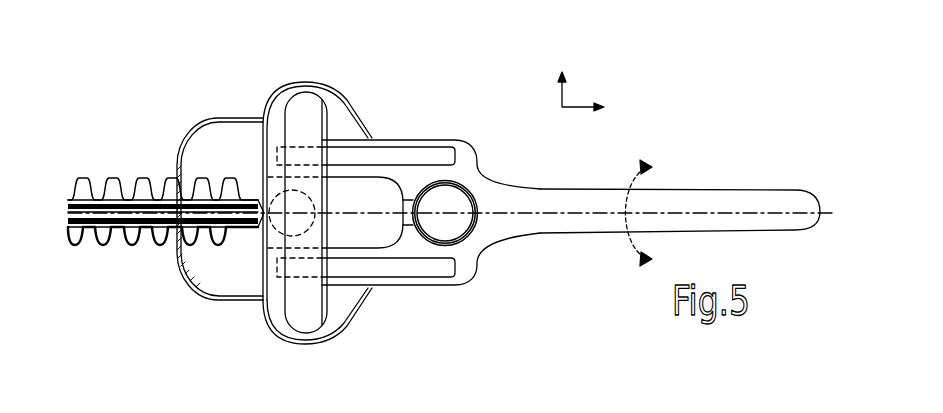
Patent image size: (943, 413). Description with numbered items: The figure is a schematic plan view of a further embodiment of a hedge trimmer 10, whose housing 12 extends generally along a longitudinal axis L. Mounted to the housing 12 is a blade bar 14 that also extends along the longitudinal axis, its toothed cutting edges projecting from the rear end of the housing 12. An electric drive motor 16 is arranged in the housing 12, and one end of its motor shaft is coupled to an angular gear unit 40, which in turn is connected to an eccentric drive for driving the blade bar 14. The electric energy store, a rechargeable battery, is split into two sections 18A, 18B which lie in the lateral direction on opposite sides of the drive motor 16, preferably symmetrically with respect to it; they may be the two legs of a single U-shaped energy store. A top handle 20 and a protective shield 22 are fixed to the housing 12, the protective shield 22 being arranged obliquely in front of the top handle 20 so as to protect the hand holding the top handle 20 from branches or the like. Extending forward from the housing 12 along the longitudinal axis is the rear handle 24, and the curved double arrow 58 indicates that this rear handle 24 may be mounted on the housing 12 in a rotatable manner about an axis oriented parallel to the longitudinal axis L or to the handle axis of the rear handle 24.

The hedge trimmer 10 is at (672, 114).
The housing 12 is at (473, 262).
The blade bar 14 is at (97, 247).
The electric drive motor 16 is at (340, 225).
The energy store section 18A is at (428, 158).
The energy store section 18B is at (410, 263).
The top handle 20 is at (312, 105).
The protective shield 22 is at (205, 150).
The rear handle 24 is at (676, 200).
The angular gear unit 40 is at (480, 225).
The rotatable mounting indication 58 is at (613, 165).